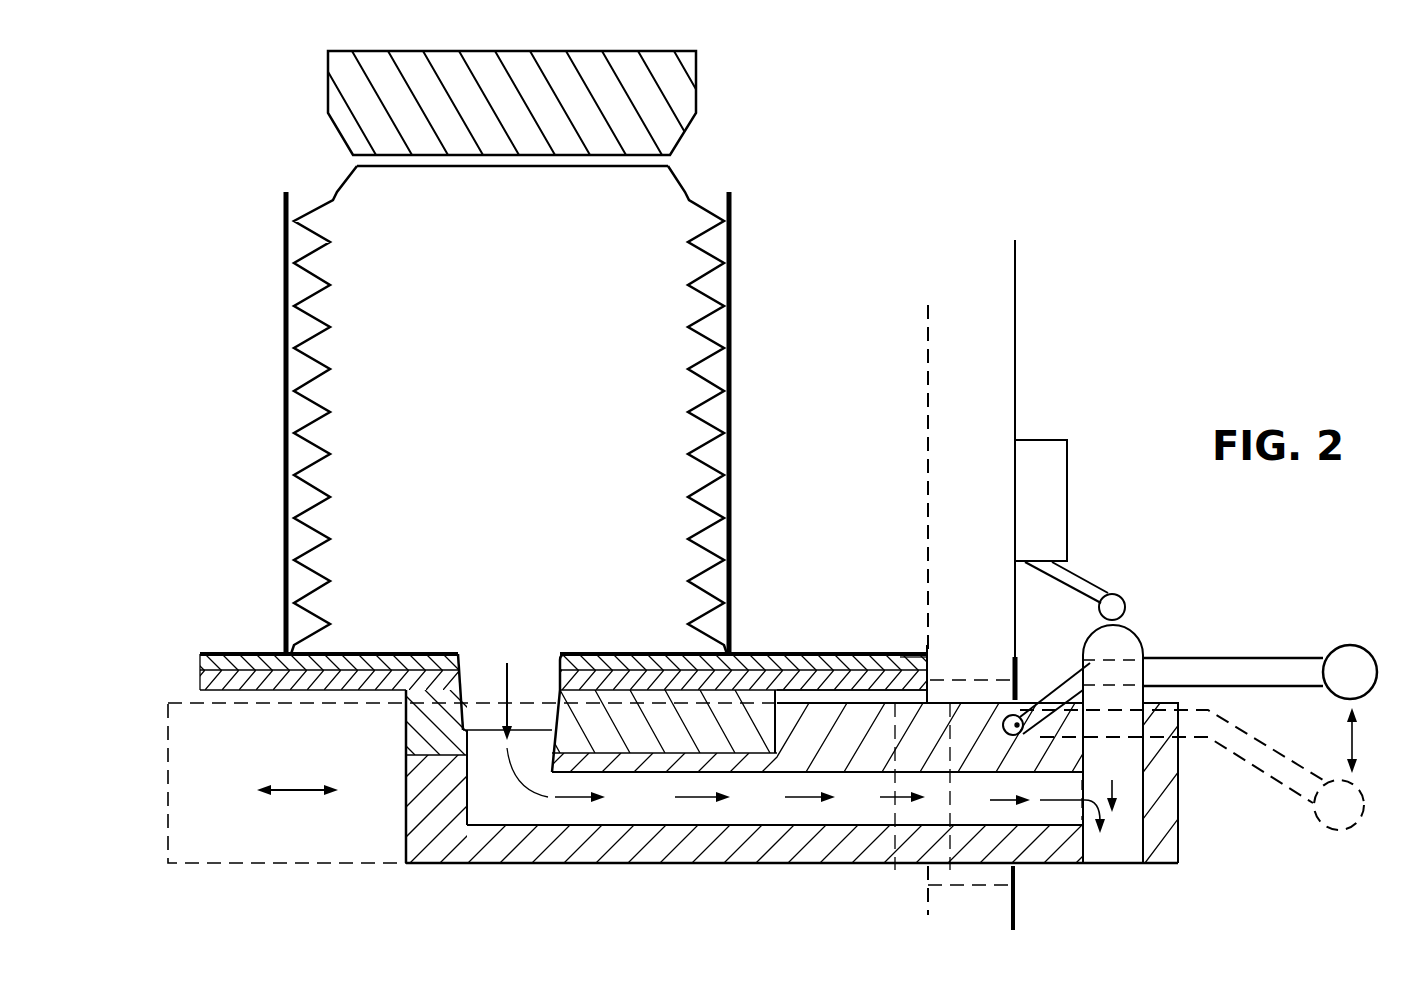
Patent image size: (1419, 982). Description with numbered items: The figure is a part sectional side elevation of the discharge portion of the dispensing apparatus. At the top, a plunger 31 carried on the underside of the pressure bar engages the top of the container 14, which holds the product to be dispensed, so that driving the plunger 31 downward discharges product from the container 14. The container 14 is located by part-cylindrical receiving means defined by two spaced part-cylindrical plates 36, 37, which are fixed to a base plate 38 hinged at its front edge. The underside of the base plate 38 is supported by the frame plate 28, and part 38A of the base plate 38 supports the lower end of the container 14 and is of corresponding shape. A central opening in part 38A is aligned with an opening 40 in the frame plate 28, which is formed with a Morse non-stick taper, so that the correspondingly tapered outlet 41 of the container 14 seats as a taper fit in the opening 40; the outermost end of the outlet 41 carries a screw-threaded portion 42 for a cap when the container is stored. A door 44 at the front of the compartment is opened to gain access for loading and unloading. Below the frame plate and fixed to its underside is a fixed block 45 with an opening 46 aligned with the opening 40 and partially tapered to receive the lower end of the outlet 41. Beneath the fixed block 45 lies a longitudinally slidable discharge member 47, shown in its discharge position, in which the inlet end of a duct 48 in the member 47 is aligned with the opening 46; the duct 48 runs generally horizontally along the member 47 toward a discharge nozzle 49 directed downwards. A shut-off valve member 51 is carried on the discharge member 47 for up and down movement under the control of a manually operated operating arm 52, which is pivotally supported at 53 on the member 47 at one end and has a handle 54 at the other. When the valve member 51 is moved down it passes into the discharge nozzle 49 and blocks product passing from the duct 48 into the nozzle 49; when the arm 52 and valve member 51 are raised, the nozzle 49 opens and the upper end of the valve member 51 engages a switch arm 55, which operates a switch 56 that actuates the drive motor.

The container 14 is at (338, 192).
The plunger 31 is at (710, 93).
The part-cylindrical plate 37 is at (284, 378).
The part-cylindrical plate 36 is at (732, 418).
The door 44 is at (1017, 340).
The switch 56 is at (1055, 518).
The switch arm 55 is at (1120, 596).
The handle 54 is at (1350, 645).
The operating arm 52 is at (1250, 662).
The shut-off valve member 51 is at (1148, 633).
The pivot 53 is at (1020, 712).
The base plate 38 is at (759, 645).
The base plate part 38A is at (617, 658).
The container outlet 41 is at (545, 665).
The frame plate 28 is at (237, 654).
The opening in fixed block 46 is at (483, 748).
The screw-threaded portion 42 is at (556, 723).
The opening in frame plate 40 is at (605, 700).
The fixed block 45 is at (778, 730).
The discharge member 47 is at (630, 848).
The duct 48 is at (655, 808).
The discharge nozzle 49 is at (1133, 833).